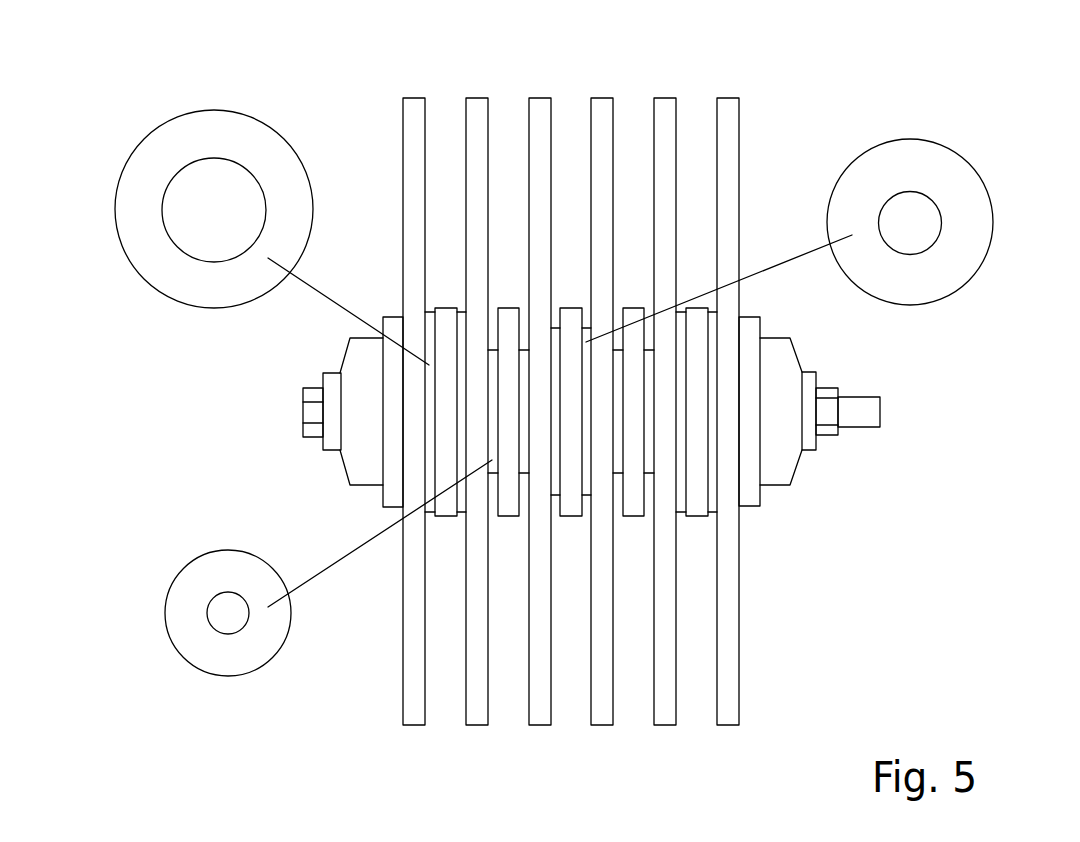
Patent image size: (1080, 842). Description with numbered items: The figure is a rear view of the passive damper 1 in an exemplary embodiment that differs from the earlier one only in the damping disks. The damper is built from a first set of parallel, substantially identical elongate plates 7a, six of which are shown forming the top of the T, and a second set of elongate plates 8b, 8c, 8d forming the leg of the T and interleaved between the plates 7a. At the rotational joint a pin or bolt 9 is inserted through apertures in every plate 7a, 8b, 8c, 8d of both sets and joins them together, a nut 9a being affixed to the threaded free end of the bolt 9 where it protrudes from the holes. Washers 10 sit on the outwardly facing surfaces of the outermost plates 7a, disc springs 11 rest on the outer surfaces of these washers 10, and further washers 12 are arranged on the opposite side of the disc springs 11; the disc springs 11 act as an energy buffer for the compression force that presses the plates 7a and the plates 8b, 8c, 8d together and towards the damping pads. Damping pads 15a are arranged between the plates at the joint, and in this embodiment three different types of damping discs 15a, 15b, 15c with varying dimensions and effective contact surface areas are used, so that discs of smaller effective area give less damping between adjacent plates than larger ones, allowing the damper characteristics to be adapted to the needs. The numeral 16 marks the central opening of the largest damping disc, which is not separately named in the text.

The passive damper 1 is at (851, 69).
The elongate plates 7a is at (413, 707).
The elongate plate 8b is at (512, 510).
The elongate plate 8c is at (571, 510).
The elongate plate 8d is at (447, 505).
The bolt 9 is at (313, 417).
The nut 9a is at (827, 427).
The washers 10 is at (392, 492).
The disc springs 11 is at (357, 465).
The washers 12 is at (333, 378).
The damping pads 15a is at (138, 173).
The damping disc 15b is at (967, 198).
The damping disc 15c is at (180, 602).
The ring opening 16 is at (188, 234).